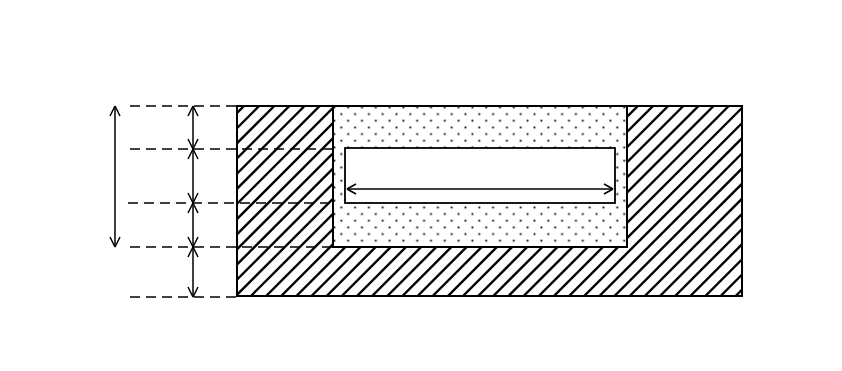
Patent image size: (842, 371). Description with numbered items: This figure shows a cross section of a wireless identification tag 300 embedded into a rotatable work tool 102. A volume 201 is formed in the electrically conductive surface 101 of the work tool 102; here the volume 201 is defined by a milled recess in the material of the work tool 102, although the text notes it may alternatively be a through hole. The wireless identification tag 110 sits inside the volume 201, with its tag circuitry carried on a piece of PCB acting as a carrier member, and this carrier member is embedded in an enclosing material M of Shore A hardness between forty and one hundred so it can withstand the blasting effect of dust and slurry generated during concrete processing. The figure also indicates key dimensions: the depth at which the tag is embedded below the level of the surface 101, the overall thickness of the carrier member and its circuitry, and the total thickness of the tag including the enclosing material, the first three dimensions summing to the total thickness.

The wireless identification tag 300 is at (130, 33).
The electrically conductive surface 101 is at (686, 104).
The rotatable work tool 102 is at (672, 204).
The wireless identification tag 110 is at (506, 107).
The volume 201 is at (382, 112).